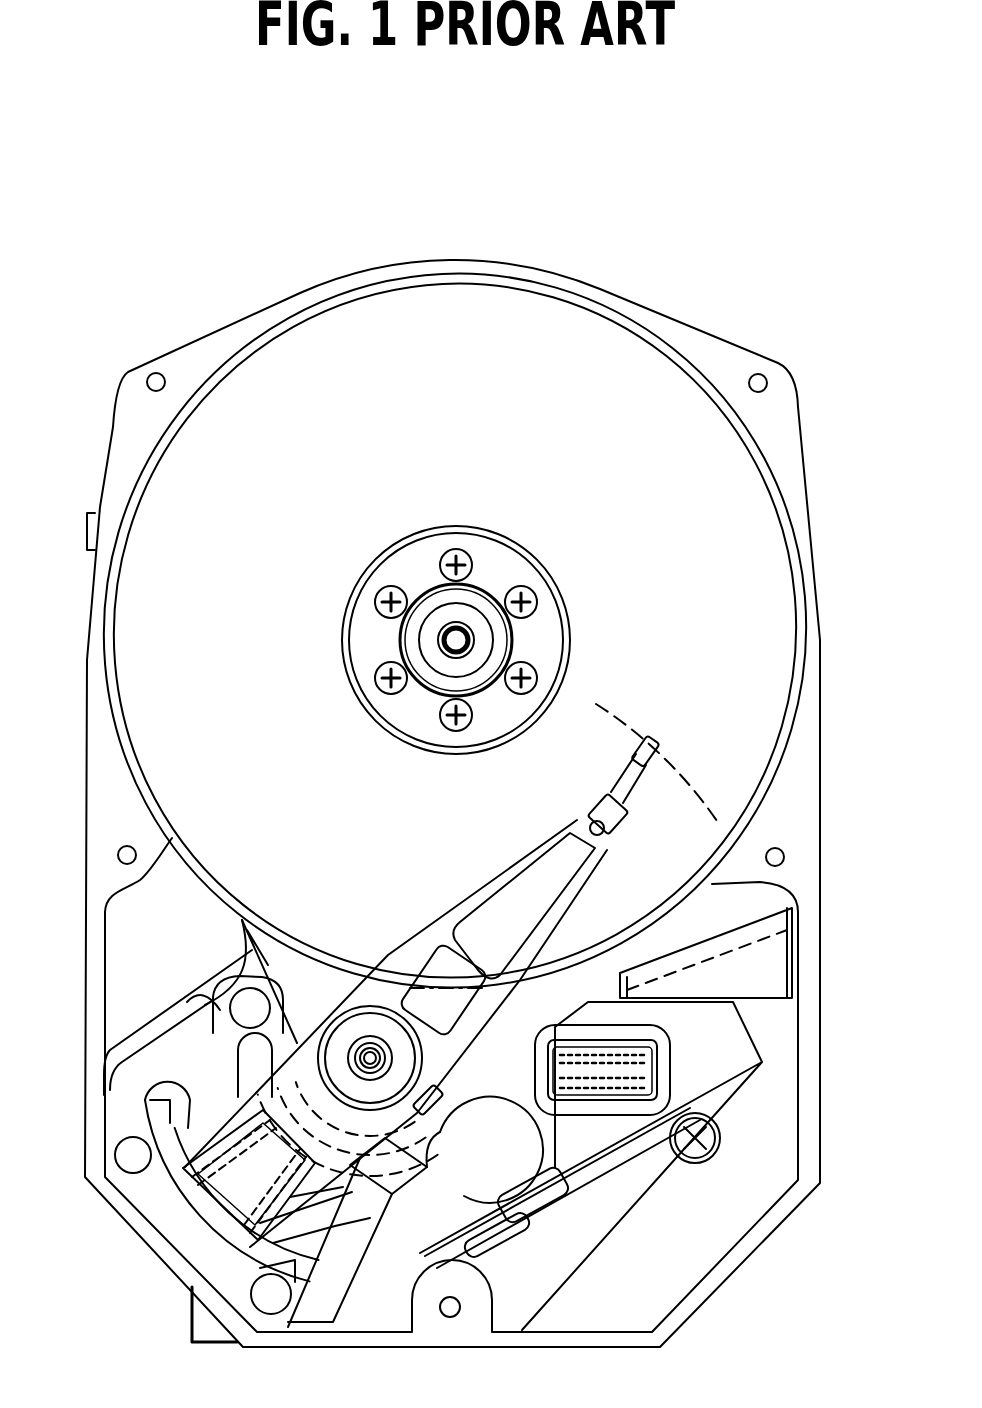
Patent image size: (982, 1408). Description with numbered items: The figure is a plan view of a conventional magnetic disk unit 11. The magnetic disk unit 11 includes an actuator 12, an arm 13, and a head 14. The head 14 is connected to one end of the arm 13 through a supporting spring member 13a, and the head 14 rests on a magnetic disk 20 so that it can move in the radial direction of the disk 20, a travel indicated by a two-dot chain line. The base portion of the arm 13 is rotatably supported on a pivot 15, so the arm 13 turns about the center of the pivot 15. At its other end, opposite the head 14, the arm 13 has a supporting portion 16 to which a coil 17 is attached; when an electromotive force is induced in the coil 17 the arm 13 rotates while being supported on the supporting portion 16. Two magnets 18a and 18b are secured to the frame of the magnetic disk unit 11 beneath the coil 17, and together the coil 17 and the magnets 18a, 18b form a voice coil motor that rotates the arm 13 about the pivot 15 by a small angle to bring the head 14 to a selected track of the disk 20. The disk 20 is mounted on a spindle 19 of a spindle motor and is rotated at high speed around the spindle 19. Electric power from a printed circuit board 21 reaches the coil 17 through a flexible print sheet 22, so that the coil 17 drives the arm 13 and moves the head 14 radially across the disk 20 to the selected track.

The magnetic disk unit 11 is at (476, 162).
The actuator 12 is at (427, 1167).
The arm 13 is at (558, 916).
The supporting spring member 13a is at (627, 798).
The head 14 is at (652, 742).
The pivot 15 is at (368, 1040).
The supporting portion 16 is at (217, 1120).
The coil 17 is at (352, 1192).
The magnet 18a is at (152, 1095).
The magnet 18b is at (181, 997).
The spindle 19 is at (470, 638).
The magnetic disk 20 is at (770, 622).
The printed circuit board 21 is at (640, 1125).
The flexible print sheet 22 is at (523, 1100).